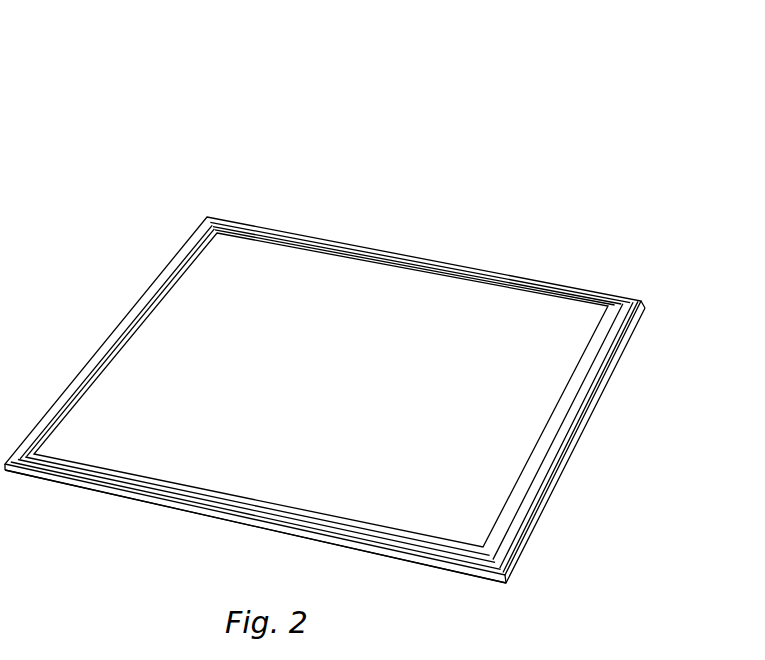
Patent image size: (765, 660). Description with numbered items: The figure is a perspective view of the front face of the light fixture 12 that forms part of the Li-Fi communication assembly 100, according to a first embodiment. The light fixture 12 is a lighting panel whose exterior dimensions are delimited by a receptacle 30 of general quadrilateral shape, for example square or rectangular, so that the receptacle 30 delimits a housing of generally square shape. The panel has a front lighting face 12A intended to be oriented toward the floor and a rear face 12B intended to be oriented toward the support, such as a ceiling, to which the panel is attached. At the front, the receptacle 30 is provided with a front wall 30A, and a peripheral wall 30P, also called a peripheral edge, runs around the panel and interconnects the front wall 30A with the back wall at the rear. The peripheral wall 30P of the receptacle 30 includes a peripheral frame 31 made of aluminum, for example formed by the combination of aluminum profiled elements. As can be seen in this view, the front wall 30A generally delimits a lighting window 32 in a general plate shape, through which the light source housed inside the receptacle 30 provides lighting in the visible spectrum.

The communication assembly 100 is at (221, 177).
The light fixture 12 is at (430, 230).
The front lighting face 12A is at (548, 327).
The rear face 12B is at (425, 568).
The receptacle 30 is at (115, 326).
The front wall 30A is at (494, 453).
The peripheral wall 30P is at (135, 500).
The peripheral frame 31 is at (636, 318).
The lighting window 32 is at (447, 382).